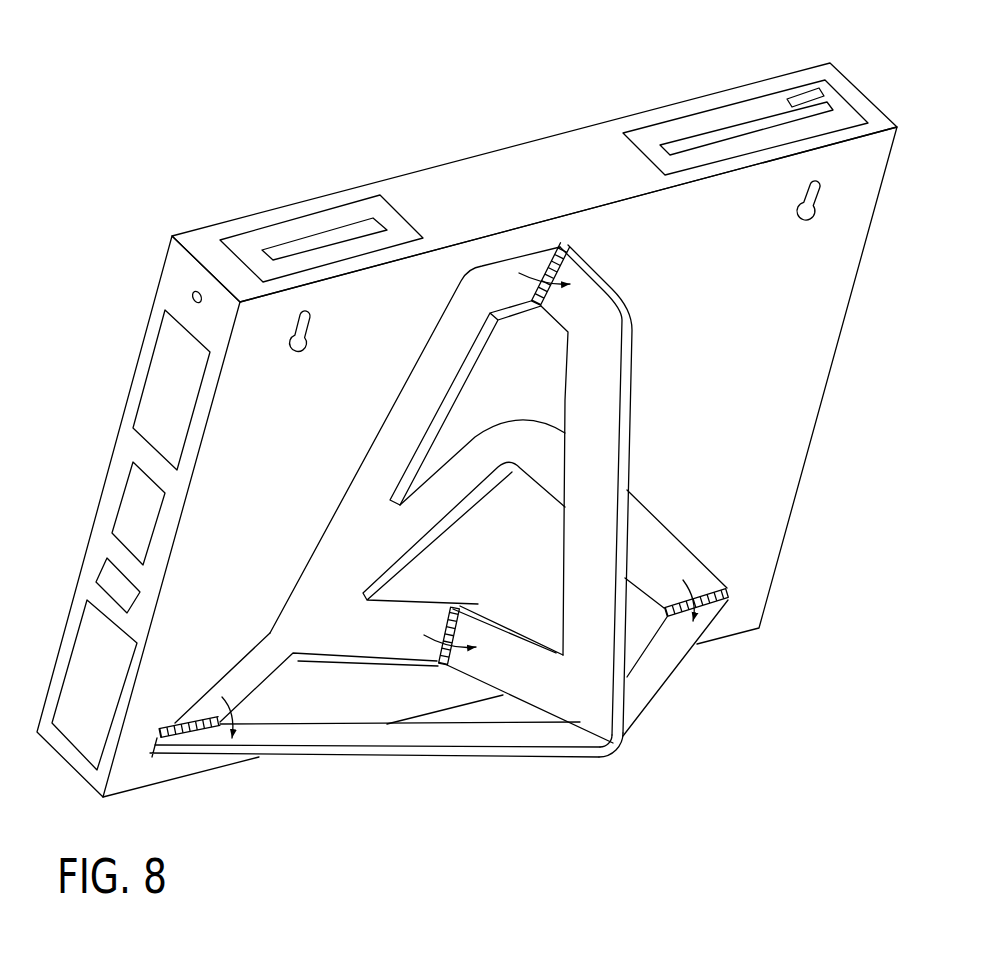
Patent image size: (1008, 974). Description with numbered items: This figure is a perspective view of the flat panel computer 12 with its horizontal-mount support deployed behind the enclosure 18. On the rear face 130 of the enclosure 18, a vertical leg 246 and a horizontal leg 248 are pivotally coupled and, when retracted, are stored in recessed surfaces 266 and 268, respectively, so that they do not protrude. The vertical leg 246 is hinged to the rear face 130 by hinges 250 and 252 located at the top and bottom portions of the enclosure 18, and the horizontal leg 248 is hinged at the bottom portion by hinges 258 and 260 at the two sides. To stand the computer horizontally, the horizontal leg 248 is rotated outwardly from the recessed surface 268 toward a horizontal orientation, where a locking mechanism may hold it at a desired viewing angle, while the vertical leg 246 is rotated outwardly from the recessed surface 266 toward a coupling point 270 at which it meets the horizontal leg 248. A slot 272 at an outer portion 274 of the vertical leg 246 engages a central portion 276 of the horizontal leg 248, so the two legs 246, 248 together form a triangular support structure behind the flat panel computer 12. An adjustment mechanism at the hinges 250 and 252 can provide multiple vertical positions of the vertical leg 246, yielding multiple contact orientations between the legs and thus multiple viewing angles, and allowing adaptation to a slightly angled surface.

The flat panel computer 12 is at (446, 97).
The enclosure 18 is at (550, 150).
The rear face 130 is at (841, 317).
The vertical leg 246 is at (627, 388).
The horizontal leg 248 is at (373, 758).
The hinge 250 is at (570, 246).
The hinge 252 is at (442, 605).
The hinge 258 is at (177, 727).
The hinge 260 is at (708, 588).
The recessed surface 266 is at (407, 375).
The recessed surface 268 is at (233, 667).
The coupling point 270 is at (634, 753).
The slot 272 is at (598, 730).
The outer portion 274 is at (617, 642).
The central portion 276 is at (584, 735).